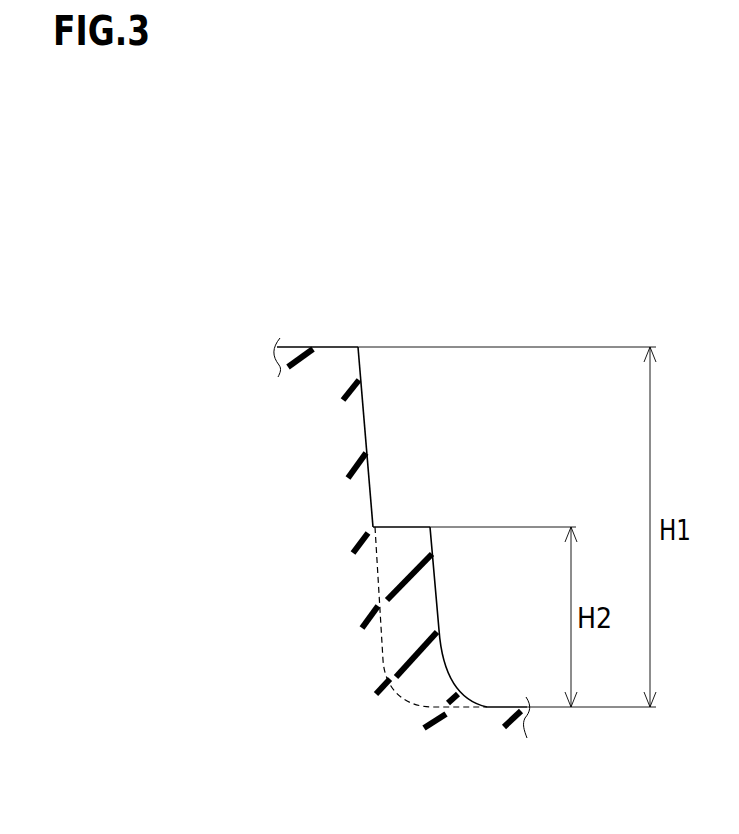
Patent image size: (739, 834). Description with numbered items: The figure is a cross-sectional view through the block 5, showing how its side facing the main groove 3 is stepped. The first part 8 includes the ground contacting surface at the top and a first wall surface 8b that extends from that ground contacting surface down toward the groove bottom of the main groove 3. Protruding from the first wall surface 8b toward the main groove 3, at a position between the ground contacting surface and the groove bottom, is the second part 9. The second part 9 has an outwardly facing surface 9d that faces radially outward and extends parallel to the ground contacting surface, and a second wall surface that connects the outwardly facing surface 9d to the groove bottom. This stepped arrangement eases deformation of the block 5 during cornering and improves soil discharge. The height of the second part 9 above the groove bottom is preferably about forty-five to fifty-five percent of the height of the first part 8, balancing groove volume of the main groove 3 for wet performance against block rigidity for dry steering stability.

The first part 8 is at (293, 347).
The first wall surface 8b is at (366, 418).
The outwardly facing surface 9d is at (405, 527).
The second part 9 is at (438, 603).
The block 5 is at (317, 513).
The main groove 3 is at (519, 703).